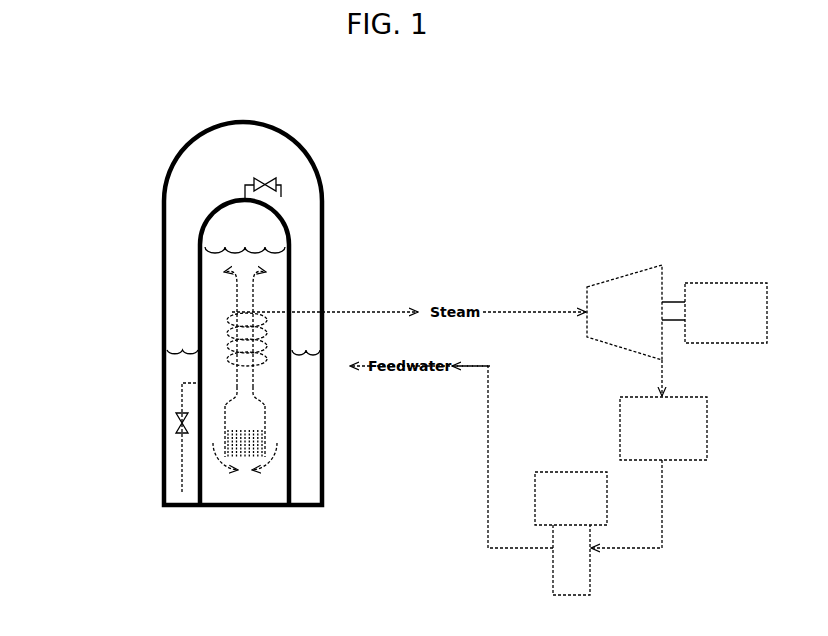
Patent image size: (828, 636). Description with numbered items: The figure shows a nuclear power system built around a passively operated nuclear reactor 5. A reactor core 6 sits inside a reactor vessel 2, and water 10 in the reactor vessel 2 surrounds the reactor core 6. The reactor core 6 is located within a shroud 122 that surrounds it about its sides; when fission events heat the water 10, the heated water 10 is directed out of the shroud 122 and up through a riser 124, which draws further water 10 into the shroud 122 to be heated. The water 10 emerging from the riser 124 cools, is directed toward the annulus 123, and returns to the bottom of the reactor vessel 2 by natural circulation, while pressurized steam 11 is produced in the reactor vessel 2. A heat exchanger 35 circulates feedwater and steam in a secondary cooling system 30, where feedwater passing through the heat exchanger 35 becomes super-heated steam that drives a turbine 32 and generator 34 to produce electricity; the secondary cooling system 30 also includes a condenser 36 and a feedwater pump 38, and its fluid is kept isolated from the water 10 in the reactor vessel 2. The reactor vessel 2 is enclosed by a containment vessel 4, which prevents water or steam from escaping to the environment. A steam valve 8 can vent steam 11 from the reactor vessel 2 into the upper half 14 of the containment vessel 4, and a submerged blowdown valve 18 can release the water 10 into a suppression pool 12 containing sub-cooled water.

The reactor vessel 2 is at (297, 258).
The containment vessel 4 is at (330, 212).
The nuclear reactor 5 is at (150, 207).
The reactor core 6 is at (272, 435).
The steam valve 8 is at (263, 180).
The water 10 is at (216, 289).
The pressurized steam 11 is at (237, 225).
The suppression pool 12 is at (308, 477).
The upper half of the containment vessel 14 is at (210, 178).
The submerged blowdown valve 18 is at (173, 425).
The secondary cooling system 30 is at (664, 280).
The turbine 32 is at (613, 320).
The generator 34 is at (716, 320).
The heat exchanger 35 is at (217, 333).
The condenser 36 is at (649, 442).
The feedwater pump 38 is at (560, 503).
The shroud 122 is at (267, 415).
The annulus 123 is at (262, 391).
The riser 124 is at (262, 297).